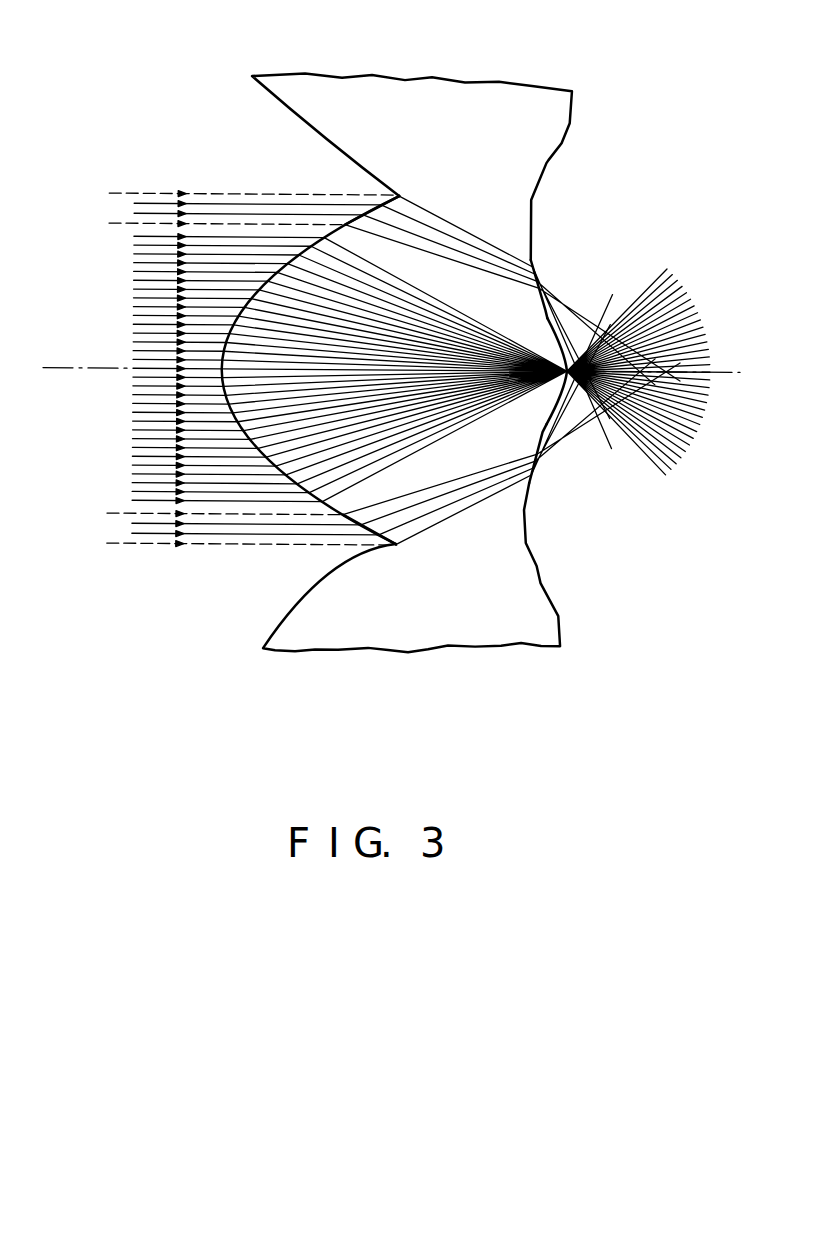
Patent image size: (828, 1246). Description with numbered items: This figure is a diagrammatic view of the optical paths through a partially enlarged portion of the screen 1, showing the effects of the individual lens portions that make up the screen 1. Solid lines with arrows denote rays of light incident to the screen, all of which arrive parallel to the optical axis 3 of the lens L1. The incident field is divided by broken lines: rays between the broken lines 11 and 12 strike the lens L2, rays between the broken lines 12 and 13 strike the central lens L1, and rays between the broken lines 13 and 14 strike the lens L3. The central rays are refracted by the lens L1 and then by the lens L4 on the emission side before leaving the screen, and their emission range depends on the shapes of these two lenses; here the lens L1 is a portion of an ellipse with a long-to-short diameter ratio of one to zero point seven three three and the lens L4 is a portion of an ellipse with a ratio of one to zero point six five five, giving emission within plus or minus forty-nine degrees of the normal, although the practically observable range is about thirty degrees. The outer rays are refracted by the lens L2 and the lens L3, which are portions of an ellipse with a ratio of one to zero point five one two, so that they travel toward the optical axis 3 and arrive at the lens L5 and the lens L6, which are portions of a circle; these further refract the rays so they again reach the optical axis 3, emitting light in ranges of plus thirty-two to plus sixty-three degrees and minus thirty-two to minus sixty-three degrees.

The screen 1 is at (468, 66).
The optical axis 3 is at (84, 367).
The broken line 11 is at (240, 193).
The broken line 12 is at (213, 226).
The broken line 13 is at (211, 515).
The broken line 14 is at (238, 546).
The lens L1 is at (263, 277).
The lens L2 is at (362, 206).
The lens L3 is at (350, 541).
The lens L4 is at (556, 330).
The lens L5 is at (535, 266).
The lens L6 is at (535, 481).